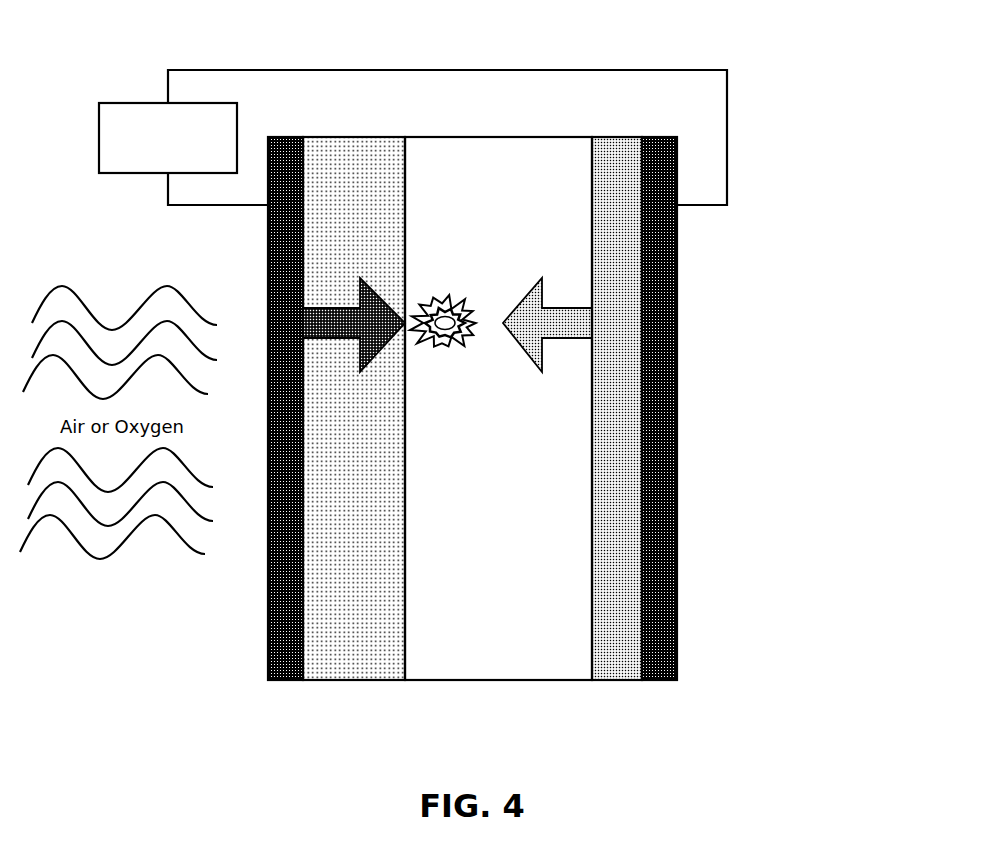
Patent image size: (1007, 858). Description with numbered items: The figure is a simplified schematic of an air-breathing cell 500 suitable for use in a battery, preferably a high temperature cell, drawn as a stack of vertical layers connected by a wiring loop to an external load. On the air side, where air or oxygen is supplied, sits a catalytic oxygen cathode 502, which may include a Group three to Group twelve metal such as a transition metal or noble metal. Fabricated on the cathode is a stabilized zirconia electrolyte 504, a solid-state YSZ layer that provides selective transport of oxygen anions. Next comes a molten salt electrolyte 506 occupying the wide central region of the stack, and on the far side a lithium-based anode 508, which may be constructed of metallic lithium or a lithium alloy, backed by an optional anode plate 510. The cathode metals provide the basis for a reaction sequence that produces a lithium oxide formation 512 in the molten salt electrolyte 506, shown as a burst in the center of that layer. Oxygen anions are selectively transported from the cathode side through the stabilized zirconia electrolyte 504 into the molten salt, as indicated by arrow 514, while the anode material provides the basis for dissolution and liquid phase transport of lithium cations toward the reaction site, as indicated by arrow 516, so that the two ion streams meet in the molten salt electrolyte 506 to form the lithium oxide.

The cell 500 is at (780, 58).
The catalytic oxygen cathode 502 is at (268, 638).
The stabilized zirconia electrolyte 504 is at (354, 408).
The molten salt electrolyte 506 is at (498, 408).
The lithium-based anode 508 is at (607, 681).
The anode plate 510 is at (677, 633).
The lithium oxide formation 512 is at (441, 291).
The arrow indicating selective transport of oxygen anions 514 is at (354, 325).
The arrow indicating liquid phase transport of lithium cations 516 is at (547, 325).